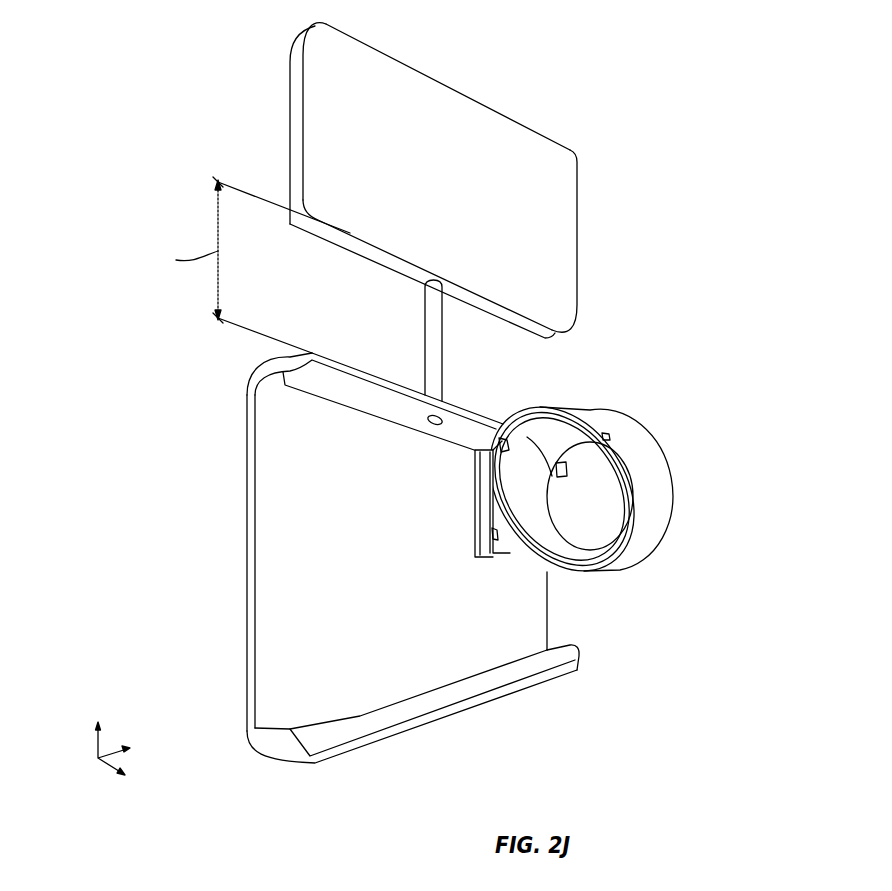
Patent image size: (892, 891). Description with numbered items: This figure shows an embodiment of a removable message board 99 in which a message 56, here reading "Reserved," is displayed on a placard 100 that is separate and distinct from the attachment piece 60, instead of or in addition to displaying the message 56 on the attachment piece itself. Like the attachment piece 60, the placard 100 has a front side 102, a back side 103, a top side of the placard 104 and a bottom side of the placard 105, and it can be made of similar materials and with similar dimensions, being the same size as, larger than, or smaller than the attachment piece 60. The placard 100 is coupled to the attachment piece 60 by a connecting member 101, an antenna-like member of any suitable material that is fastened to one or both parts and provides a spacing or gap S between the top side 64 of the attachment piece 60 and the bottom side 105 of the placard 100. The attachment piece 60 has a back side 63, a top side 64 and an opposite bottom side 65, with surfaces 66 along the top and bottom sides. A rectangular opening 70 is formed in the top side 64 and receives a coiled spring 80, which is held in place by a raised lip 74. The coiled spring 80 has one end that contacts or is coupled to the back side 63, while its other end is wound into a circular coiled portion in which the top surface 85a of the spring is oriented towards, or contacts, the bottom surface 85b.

The message board 99 is at (657, 195).
The placard 100 is at (427, 88).
The top side of the placard 104 is at (373, 44).
The front side 102 is at (290, 113).
The back side 103 is at (349, 229).
The bottom side of the placard 105 is at (410, 271).
The message 56 is at (516, 167).
The connecting member 101 is at (434, 331).
The attachment piece 60 is at (598, 630).
The back side 63 is at (393, 578).
The top side 64 is at (455, 412).
The bottom side 65 is at (392, 738).
The flange surface 66 is at (373, 403).
The opening 70 is at (512, 402).
The raised lip 74 is at (477, 497).
The coiled spring 80 is at (647, 517).
The top surface 85a is at (503, 448).
The bottom surface 85b is at (554, 474).